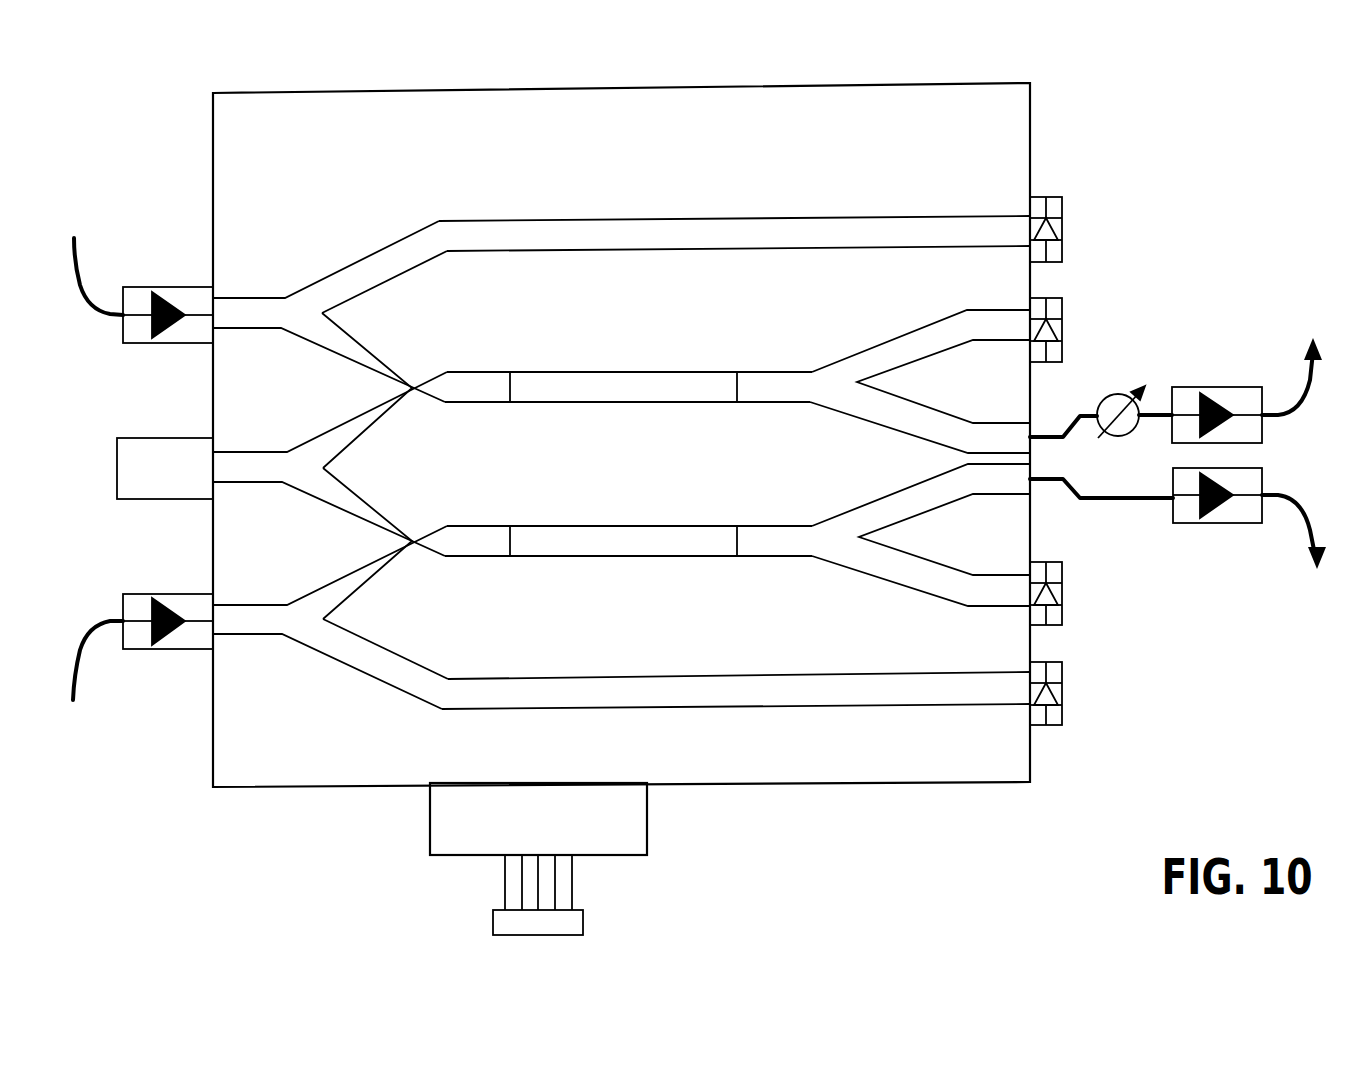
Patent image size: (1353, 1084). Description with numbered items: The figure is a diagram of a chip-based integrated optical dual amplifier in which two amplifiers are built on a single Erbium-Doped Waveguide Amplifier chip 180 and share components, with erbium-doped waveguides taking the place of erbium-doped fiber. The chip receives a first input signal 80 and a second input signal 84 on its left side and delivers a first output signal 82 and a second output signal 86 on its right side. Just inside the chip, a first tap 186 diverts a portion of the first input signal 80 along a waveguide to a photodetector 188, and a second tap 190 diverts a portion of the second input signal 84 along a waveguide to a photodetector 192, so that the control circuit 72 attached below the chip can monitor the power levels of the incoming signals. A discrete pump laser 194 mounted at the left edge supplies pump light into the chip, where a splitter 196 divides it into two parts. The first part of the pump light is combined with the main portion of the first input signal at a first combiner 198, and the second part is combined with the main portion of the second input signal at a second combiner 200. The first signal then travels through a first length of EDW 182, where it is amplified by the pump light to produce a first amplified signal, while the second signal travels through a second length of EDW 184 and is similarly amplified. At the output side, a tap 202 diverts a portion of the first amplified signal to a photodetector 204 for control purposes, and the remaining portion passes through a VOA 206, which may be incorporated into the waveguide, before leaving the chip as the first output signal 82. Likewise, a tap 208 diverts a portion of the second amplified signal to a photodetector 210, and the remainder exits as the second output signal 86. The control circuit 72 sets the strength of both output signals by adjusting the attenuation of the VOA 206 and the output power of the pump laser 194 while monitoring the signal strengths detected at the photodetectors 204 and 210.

The Erbium-Doped Waveguide Amplifier chip 180 is at (773, 83).
The first input signal 80 is at (83, 270).
The second input signal 84 is at (83, 660).
The pump laser 194 is at (160, 437).
The first tap 186 is at (297, 313).
The splitter 196 is at (297, 467).
The second tap 190 is at (297, 619).
The first combiner 198 is at (432, 388).
The second combiner 200 is at (432, 541).
The first length of EDW 182 is at (655, 370).
The second length of EDW 184 is at (655, 524).
The tap 202 is at (830, 380).
The tap 208 is at (830, 537).
The photodetector 188 is at (1062, 227).
The photodetector 204 is at (1062, 330).
The photodetector 210 is at (1062, 593).
The photodetector 192 is at (1062, 700).
The VOA 206 is at (1105, 395).
The first output signal 82 is at (1300, 377).
The second output signal 86 is at (1300, 530).
The control circuit 72 is at (647, 812).